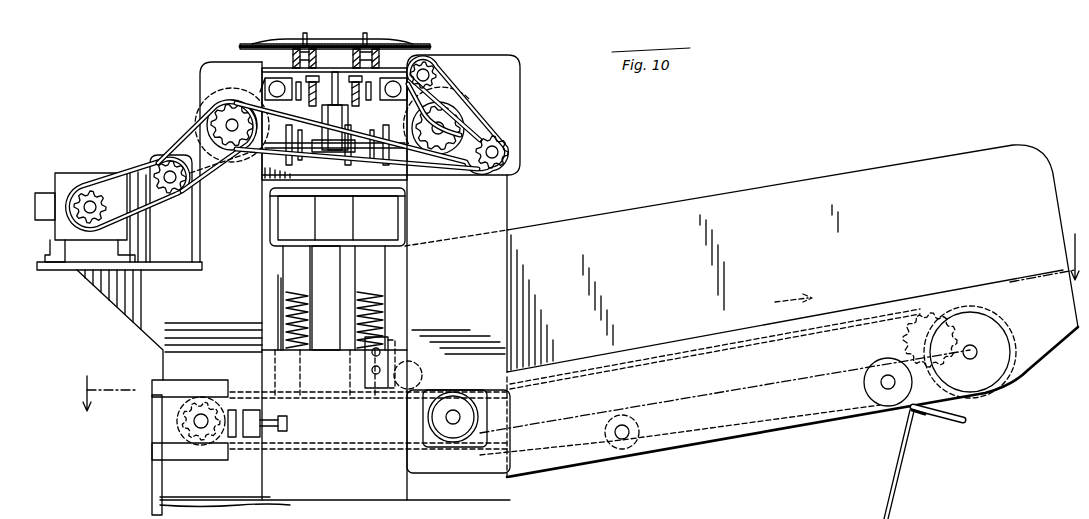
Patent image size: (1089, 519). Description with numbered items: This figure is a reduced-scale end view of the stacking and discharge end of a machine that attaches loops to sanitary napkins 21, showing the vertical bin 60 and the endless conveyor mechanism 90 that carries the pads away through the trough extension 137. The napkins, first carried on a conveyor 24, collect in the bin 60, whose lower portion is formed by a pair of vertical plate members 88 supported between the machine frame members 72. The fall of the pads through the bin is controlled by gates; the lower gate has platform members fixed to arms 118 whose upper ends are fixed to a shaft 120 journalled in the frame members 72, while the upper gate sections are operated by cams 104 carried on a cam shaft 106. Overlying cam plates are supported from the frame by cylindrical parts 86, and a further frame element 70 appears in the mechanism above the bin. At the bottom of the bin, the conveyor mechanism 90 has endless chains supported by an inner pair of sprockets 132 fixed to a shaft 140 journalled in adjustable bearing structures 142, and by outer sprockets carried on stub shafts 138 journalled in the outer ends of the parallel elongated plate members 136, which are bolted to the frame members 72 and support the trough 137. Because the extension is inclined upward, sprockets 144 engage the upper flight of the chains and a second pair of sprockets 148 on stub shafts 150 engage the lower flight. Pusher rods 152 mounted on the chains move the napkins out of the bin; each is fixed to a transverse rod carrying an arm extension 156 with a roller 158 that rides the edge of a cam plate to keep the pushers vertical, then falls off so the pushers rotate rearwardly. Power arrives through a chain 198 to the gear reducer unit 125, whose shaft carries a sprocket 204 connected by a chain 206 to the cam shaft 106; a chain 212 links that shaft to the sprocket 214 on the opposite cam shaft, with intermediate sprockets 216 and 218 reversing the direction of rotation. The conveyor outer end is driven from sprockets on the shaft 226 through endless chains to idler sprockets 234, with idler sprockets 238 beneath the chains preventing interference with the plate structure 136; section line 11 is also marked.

The sanitary napkin 21 is at (380, 43).
The conveyor 24 is at (336, 58).
The vertical bin 60 is at (337, 217).
The drive shaft assembly 70 is at (330, 160).
The machine frame members 72 is at (508, 194).
The cylindrical parts 86 is at (340, 113).
The vertical plate members 88 is at (380, 290).
The endless conveyor mechanism 90 is at (779, 373).
The cams 104 is at (195, 118).
The cam shaft 106 is at (213, 112).
The arms 118 is at (402, 218).
The shaft 120 is at (368, 199).
The gear reducer unit 125 is at (187, 223).
The inner pair of sprockets 132 is at (227, 437).
The elongated plate members 136 is at (568, 465).
The trough extension 137 is at (792, 257).
The stub shafts 138 is at (983, 338).
The shaft 140 is at (198, 428).
The adjustable bearing structures 142 is at (262, 435).
The sprockets 144 is at (425, 367).
The second pair of sprockets 148 is at (640, 426).
The stub shafts 150 is at (628, 440).
The pusher rods 152 is at (290, 283).
The arm extension 156 is at (947, 424).
The roller 158 is at (967, 418).
The chain 198 is at (135, 167).
The sprocket 204 is at (178, 200).
The chain 206 is at (190, 143).
The chain 212 is at (245, 157).
The sprocket 214 is at (443, 143).
The intermediate sprocket 216 is at (510, 152).
The intermediate sprocket 218 is at (432, 62).
The shaft 226 is at (460, 417).
The idler sprockets 234 is at (916, 330).
The idler sprockets 238 is at (865, 390).
The section line 11 is at (579, 313).